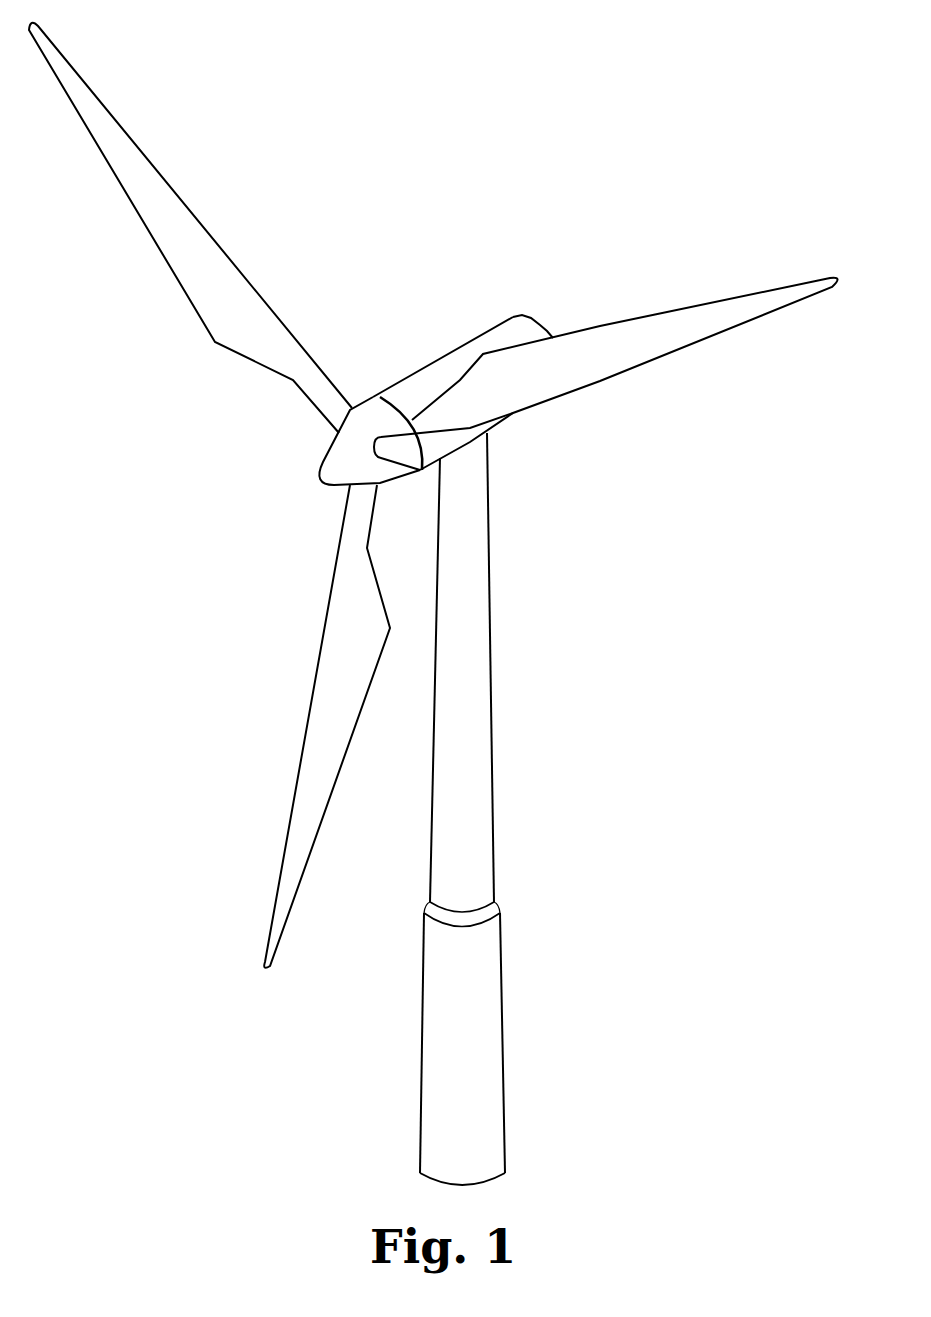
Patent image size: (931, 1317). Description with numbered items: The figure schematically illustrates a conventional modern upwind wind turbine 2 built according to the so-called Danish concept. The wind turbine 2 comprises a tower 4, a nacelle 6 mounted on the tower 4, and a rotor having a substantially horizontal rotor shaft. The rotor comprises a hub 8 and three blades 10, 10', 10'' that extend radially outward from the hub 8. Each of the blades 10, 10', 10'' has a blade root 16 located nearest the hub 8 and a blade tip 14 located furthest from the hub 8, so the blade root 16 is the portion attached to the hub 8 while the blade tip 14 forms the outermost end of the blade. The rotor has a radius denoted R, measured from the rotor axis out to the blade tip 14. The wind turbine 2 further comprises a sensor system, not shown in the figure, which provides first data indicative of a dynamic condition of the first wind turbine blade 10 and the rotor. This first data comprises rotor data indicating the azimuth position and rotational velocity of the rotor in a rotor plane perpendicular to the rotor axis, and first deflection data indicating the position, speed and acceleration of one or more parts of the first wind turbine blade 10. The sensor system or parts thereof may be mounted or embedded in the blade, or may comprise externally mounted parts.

The wind turbine 2 is at (583, 748).
The tower 4 is at (480, 672).
The nacelle 6 is at (427, 380).
The hub 8 is at (333, 463).
The blade 10 is at (625, 374).
The blade 10' is at (328, 726).
The blade 10'' is at (190, 228).
The blade tip 14 is at (73, 80).
The blade root 16 is at (343, 417).